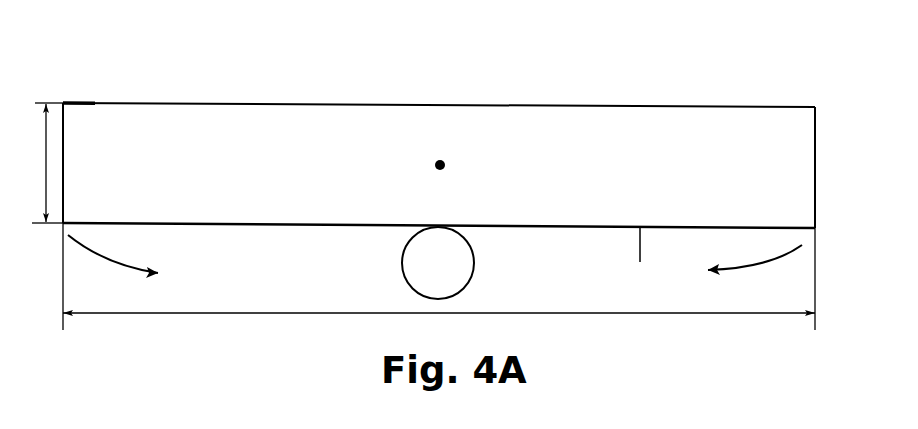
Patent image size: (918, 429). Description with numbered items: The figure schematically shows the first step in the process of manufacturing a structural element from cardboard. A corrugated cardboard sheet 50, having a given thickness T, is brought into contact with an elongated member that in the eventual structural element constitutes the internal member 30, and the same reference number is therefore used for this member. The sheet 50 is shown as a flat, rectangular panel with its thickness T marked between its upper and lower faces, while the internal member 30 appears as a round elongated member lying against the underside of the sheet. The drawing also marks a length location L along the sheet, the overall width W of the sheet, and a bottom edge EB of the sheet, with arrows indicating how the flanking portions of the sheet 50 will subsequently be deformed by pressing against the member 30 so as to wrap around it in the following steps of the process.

The internal member 30 is at (416, 270).
The corrugated cardboard sheet 50 is at (560, 123).
The length location L is at (440, 165).
The thickness T is at (38, 163).
The width W is at (439, 276).
The bottom edge EB is at (651, 259).